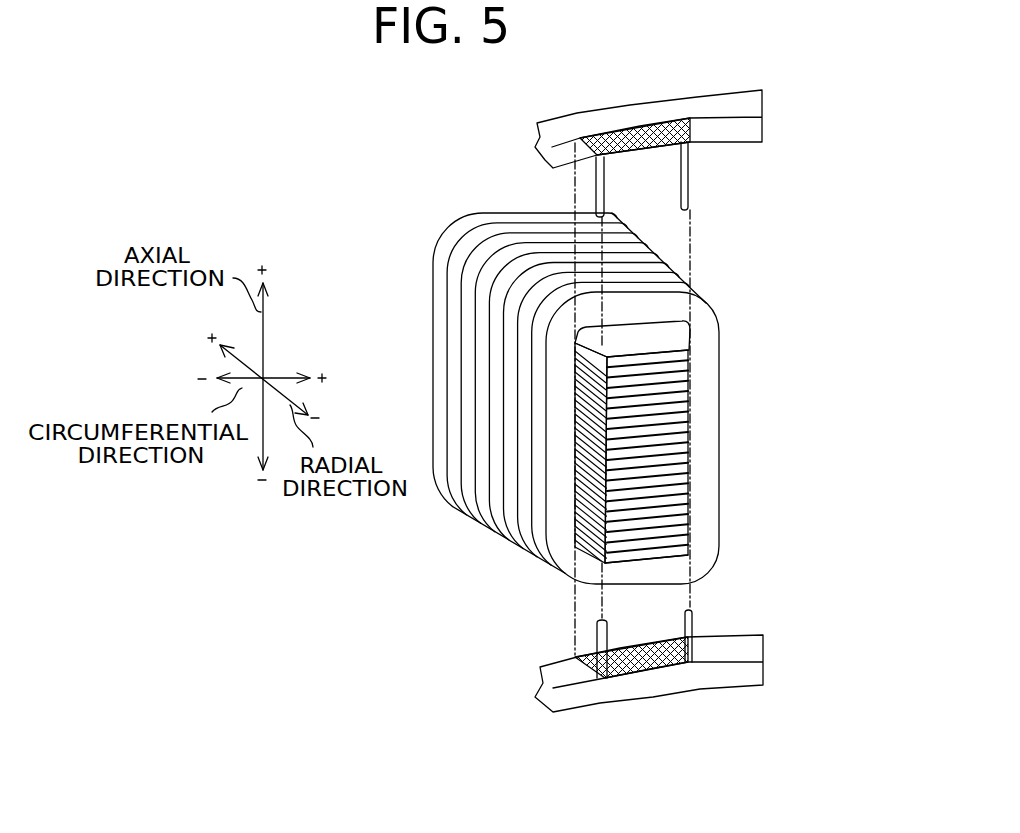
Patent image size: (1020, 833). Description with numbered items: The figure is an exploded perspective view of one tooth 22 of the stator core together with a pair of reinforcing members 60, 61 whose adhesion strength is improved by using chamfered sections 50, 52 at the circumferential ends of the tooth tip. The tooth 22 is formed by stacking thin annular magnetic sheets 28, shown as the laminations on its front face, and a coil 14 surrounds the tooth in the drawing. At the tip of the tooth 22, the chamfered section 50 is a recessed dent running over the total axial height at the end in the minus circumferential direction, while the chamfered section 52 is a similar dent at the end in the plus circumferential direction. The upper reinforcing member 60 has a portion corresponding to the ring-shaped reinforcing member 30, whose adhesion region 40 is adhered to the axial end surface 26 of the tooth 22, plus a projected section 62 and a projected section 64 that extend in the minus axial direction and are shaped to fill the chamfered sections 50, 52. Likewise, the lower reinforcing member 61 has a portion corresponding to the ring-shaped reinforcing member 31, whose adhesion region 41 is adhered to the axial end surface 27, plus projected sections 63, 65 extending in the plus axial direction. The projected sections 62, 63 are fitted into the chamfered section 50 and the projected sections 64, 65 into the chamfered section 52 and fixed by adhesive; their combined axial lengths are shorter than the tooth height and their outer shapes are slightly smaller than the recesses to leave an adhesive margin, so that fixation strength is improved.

The coil 14 is at (607, 398).
The tooth 22 is at (632, 457).
The axial end surface 26 is at (677, 343).
The axial end surface 27 is at (667, 569).
The thin annular magnetic sheet 28 is at (690, 450).
The reinforcing member 30 is at (707, 135).
The reinforcing member 31 is at (730, 645).
The adhesion region 40 is at (612, 127).
The adhesion region 41 is at (650, 675).
The chamfered section 50 is at (585, 505).
The chamfered section 52 is at (690, 510).
The reinforcing member 60 is at (684, 141).
The reinforcing member 61 is at (685, 659).
The projected section 62 is at (608, 186).
The projected section 63 is at (610, 632).
The projected section 64 is at (781, 145).
The projected section 65 is at (693, 620).